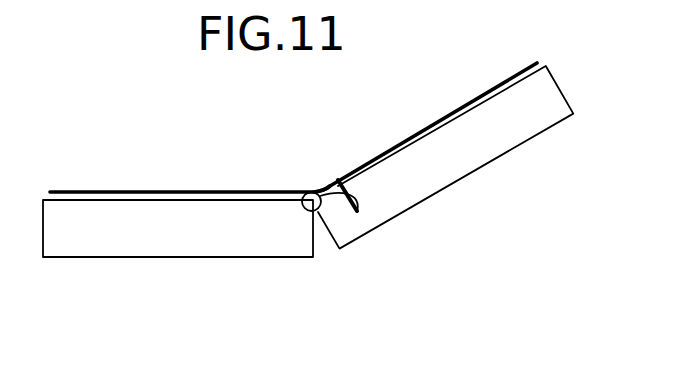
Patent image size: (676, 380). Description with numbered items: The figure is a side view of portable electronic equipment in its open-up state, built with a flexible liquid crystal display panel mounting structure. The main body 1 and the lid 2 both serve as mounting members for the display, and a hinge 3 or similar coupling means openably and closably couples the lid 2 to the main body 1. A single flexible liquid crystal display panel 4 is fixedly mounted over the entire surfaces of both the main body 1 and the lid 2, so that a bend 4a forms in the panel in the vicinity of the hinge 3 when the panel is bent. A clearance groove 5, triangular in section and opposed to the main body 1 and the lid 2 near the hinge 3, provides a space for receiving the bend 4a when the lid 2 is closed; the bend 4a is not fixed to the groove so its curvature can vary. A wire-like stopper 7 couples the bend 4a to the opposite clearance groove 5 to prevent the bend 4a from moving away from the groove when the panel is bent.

The main body 1 is at (163, 257).
The lid 2 is at (494, 158).
The hinge 3 is at (302, 193).
The flexible liquid crystal display panel 4 is at (152, 192).
The bend 4a is at (324, 188).
The clearance groove 5 is at (343, 248).
The stopper 7 is at (366, 194).